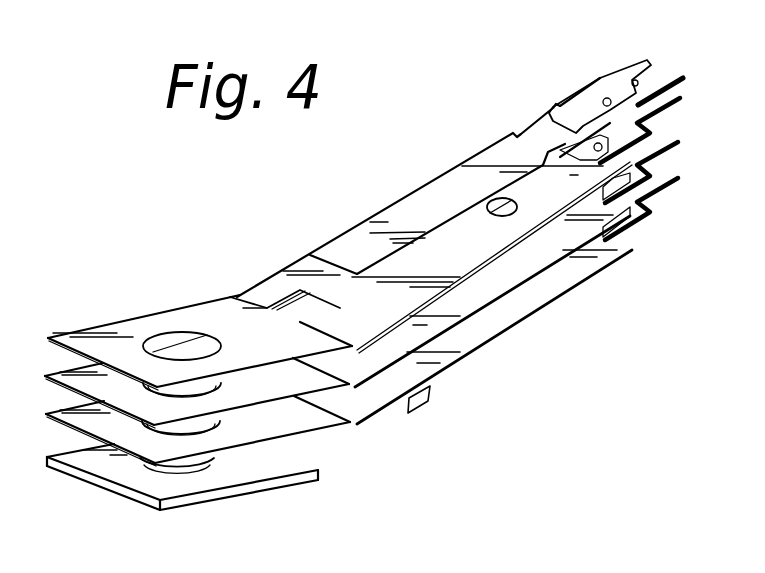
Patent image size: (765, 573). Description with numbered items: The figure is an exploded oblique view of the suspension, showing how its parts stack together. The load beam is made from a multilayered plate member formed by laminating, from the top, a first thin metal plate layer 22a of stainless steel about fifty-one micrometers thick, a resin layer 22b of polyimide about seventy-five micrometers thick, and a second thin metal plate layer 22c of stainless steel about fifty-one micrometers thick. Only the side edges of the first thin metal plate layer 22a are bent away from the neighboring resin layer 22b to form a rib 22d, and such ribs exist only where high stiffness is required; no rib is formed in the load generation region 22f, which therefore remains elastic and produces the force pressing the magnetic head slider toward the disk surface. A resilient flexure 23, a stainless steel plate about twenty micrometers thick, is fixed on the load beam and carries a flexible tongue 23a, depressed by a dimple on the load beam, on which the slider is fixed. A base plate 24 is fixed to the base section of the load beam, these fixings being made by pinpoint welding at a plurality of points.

The flexure 23 is at (500, 160).
The tongue 23a is at (620, 95).
The first thin metal plate layer 22a is at (560, 265).
The resin layer 22b is at (488, 283).
The second thin metal plate layer 22c is at (398, 295).
The rib 22d is at (432, 387).
The load generation region 22f is at (348, 432).
The base plate 24 is at (160, 480).